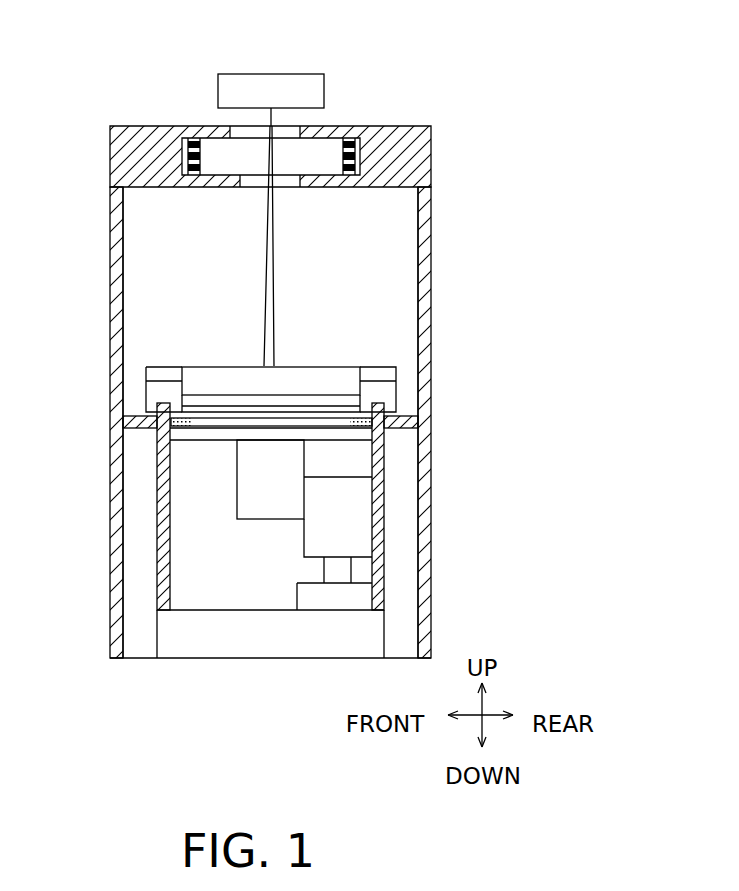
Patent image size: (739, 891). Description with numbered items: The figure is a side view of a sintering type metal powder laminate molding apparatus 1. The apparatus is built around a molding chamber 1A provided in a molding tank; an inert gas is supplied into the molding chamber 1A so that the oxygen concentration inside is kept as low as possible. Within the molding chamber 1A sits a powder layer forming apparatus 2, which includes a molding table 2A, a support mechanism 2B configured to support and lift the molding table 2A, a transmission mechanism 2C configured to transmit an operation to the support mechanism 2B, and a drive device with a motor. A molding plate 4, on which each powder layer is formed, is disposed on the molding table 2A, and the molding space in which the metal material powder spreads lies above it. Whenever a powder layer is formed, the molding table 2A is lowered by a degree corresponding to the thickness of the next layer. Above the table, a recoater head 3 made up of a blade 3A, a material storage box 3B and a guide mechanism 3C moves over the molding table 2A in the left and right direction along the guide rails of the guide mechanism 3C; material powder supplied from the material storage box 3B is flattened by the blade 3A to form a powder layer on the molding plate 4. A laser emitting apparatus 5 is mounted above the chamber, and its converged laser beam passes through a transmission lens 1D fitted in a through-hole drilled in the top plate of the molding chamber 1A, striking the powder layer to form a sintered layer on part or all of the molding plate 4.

The laminate molding apparatus 1 is at (308, 350).
The molding chamber 1A is at (165, 223).
The transmission lens 1D is at (300, 130).
The powder layer forming apparatus 2 is at (266, 530).
The molding table 2A is at (175, 433).
The support mechanism 2B is at (243, 498).
The transmission mechanism 2C is at (364, 502).
The recoater head 3 is at (324, 338).
The blade 3A is at (277, 408).
The material storage box 3B is at (223, 381).
The guide mechanism 3C is at (388, 394).
The molding plate 4 is at (243, 422).
The laser emitting apparatus 5 is at (238, 82).